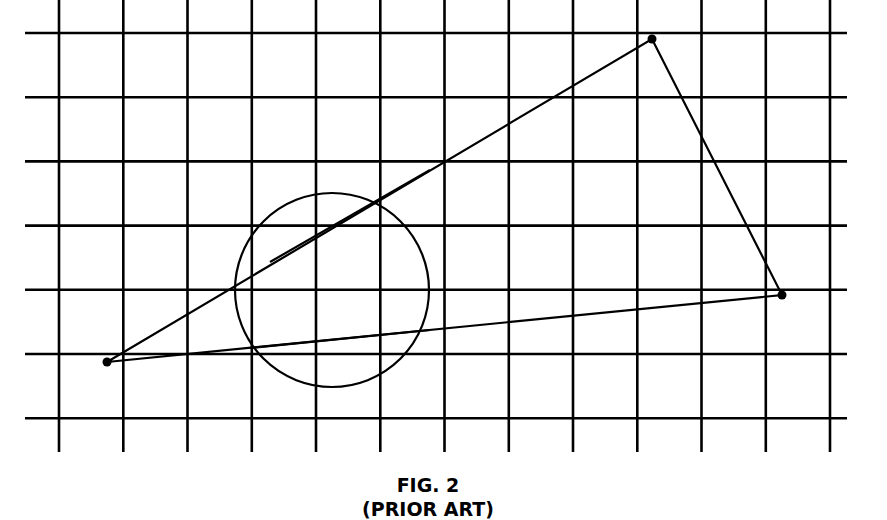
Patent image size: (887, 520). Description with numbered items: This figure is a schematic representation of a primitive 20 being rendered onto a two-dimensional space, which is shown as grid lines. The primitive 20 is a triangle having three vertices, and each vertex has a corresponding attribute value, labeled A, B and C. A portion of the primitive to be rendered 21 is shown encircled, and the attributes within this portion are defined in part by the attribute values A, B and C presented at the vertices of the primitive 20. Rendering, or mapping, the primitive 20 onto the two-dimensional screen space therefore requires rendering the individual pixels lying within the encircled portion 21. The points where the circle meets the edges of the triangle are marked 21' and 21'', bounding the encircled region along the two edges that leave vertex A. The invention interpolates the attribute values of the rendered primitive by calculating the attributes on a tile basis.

The primitive 20 is at (724, 143).
The portion of the primitive to be rendered 21 is at (339, 292).
The intersection of circle with line AC 21' is at (350, 216).
The intersection of circle with line AB 21'' is at (340, 352).